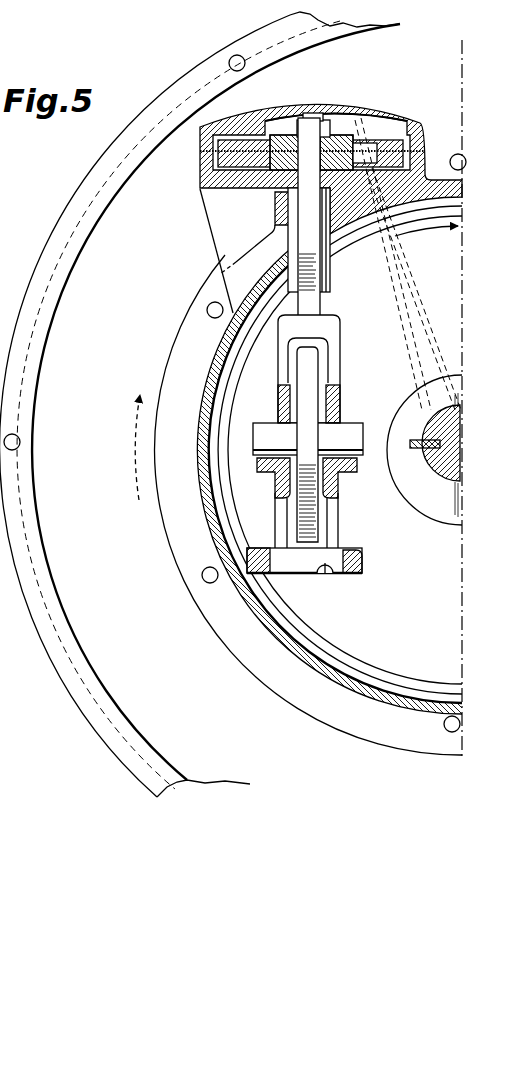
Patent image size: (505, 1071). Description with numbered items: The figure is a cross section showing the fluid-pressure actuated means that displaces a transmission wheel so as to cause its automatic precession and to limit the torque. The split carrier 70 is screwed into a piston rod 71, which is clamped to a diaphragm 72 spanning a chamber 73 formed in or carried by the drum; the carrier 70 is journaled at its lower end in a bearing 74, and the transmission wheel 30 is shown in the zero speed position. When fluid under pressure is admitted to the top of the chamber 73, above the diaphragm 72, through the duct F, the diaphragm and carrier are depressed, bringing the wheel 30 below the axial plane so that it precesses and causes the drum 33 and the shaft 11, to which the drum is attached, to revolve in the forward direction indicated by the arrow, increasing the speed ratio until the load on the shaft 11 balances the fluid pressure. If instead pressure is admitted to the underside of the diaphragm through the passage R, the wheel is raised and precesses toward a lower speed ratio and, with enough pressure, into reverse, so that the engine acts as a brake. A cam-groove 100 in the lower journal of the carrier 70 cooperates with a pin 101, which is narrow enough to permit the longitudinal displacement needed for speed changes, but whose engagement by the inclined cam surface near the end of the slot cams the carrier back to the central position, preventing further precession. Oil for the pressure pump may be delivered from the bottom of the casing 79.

The casing 79 is at (110, 733).
The drum 33 is at (216, 352).
The chamber 73 is at (370, 99).
The diaphragm 72 is at (243, 150).
The piston rod 71 is at (296, 215).
The split carrier 70 is at (333, 516).
The transmission wheel 30 is at (306, 380).
The bearing 74 is at (359, 577).
The cam-groove 100 is at (323, 576).
The pin 101 is at (363, 561).
The shaft 11 is at (449, 478).
The passage R is at (394, 311).
The duct F is at (409, 285).